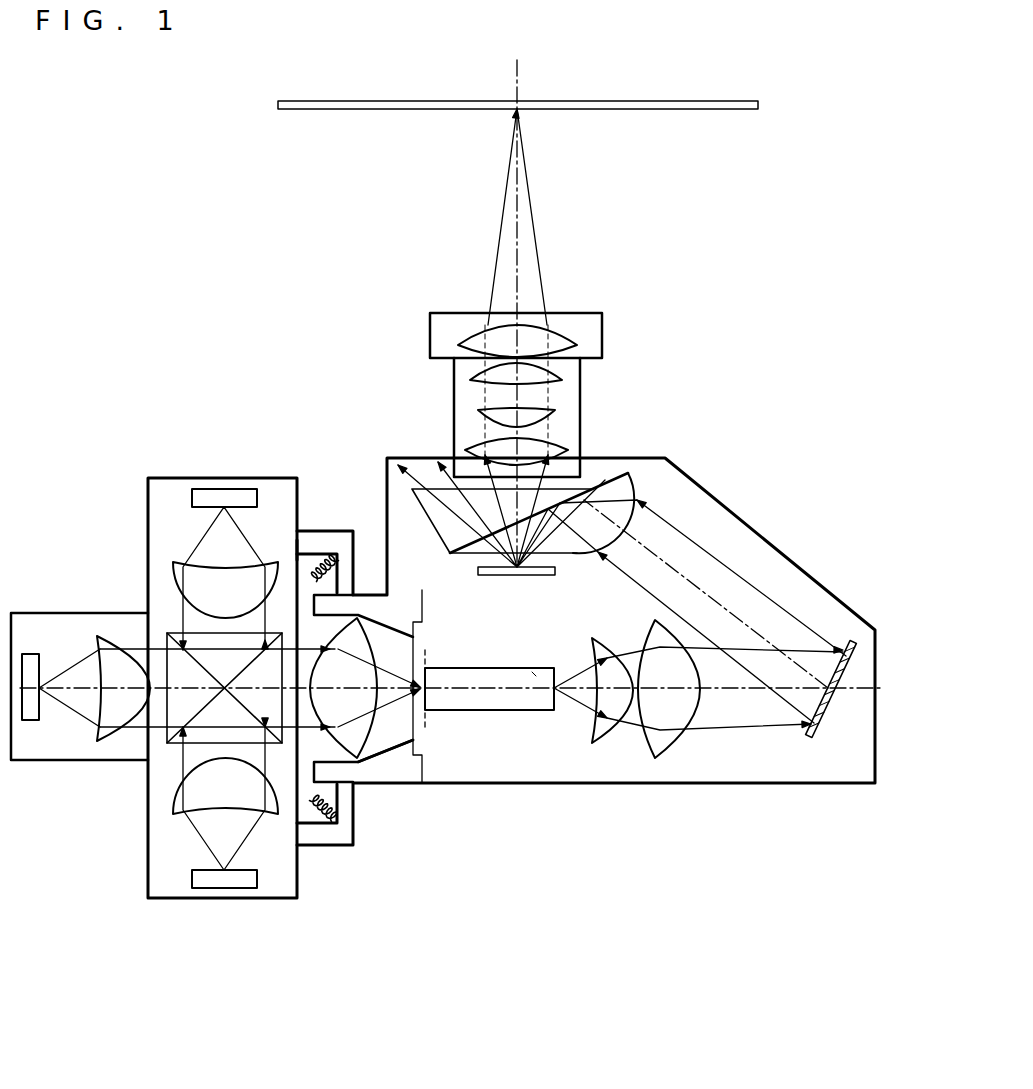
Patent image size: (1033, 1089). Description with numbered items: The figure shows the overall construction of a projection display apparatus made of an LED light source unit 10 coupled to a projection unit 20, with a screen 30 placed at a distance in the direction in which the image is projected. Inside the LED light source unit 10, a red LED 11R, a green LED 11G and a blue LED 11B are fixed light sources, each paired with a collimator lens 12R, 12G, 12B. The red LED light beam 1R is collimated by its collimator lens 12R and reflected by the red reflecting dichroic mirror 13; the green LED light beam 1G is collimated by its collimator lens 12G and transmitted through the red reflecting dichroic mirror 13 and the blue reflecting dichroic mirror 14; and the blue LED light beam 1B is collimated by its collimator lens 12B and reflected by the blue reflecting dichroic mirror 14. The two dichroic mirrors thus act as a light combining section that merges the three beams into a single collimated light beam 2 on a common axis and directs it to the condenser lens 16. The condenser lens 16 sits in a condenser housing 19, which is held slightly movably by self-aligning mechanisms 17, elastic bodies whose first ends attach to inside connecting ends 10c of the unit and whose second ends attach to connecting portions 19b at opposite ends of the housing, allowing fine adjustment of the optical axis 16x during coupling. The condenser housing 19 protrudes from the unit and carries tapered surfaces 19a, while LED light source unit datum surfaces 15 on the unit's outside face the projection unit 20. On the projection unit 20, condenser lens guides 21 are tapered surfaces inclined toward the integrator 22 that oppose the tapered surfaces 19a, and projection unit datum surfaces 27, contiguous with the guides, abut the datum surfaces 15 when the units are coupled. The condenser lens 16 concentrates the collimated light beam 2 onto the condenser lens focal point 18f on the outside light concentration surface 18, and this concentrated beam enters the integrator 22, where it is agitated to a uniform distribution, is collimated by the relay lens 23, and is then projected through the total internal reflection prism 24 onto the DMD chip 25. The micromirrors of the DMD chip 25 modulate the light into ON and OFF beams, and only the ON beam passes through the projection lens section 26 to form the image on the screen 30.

The red LED light beam 1R is at (182, 622).
The green LED light beam 1G is at (148, 647).
The blue LED light beam 1B is at (182, 757).
The collimated light beam 2 is at (291, 648).
The LED light source unit 10 is at (165, 512).
The inside connecting end 10c is at (335, 538).
The red LED 11R is at (224, 487).
The green LED 11G is at (32, 712).
The blue LED 11B is at (224, 888).
The collimator lens 12R is at (197, 580).
The collimator lens 12G is at (113, 660).
The collimator lens 12B is at (218, 797).
The red reflecting dichroic mirror 13 is at (200, 711).
The blue reflecting dichroic mirror 14 is at (208, 670).
The LED light source unit datum surface 15 is at (358, 538).
The condenser lens 16 is at (352, 643).
The optical axis 16x is at (534, 672).
The self-aligning mechanism 17 is at (320, 558).
The outside light concentration surface 18 is at (427, 727).
The condenser lens focal point 18f is at (428, 688).
The condenser housing 19 is at (418, 642).
The tapered surface 19a is at (385, 622).
The connecting portion 19b is at (296, 590).
The projection unit 20 is at (743, 537).
The condenser lens guide 21 is at (377, 770).
The integrator 22 is at (532, 712).
The relay lens 23 is at (590, 755).
The total internal reflection prism 24 is at (606, 490).
The DMD chip 25 is at (528, 578).
The projection lens section 26 is at (578, 313).
The projection unit datum surface 27 is at (352, 800).
The screen 30 is at (628, 100).